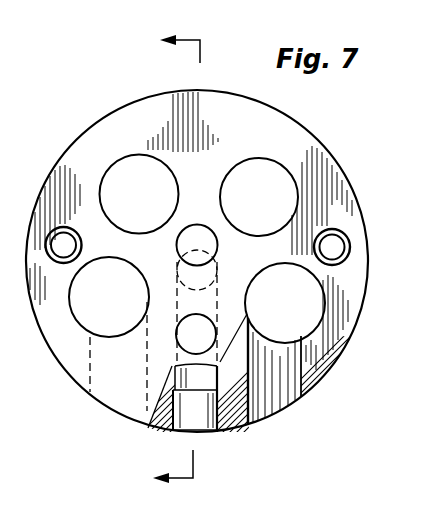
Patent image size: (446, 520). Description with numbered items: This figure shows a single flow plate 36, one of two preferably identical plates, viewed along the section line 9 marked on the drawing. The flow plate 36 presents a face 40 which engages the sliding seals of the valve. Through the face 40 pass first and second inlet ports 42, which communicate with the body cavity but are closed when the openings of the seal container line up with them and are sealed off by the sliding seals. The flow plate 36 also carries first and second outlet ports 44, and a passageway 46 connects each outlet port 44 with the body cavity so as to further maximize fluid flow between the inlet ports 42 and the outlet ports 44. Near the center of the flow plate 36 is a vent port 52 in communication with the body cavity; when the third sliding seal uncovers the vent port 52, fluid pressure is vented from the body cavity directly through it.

The section line 9- 9 is at (184, 260).
The flow plate 36 is at (331, 155).
The face 40 is at (263, 118).
The inlet ports 42 is at (128, 180).
The outlet ports 44 is at (83, 307).
The passageway 46 is at (112, 410).
The vent port 52 is at (182, 338).